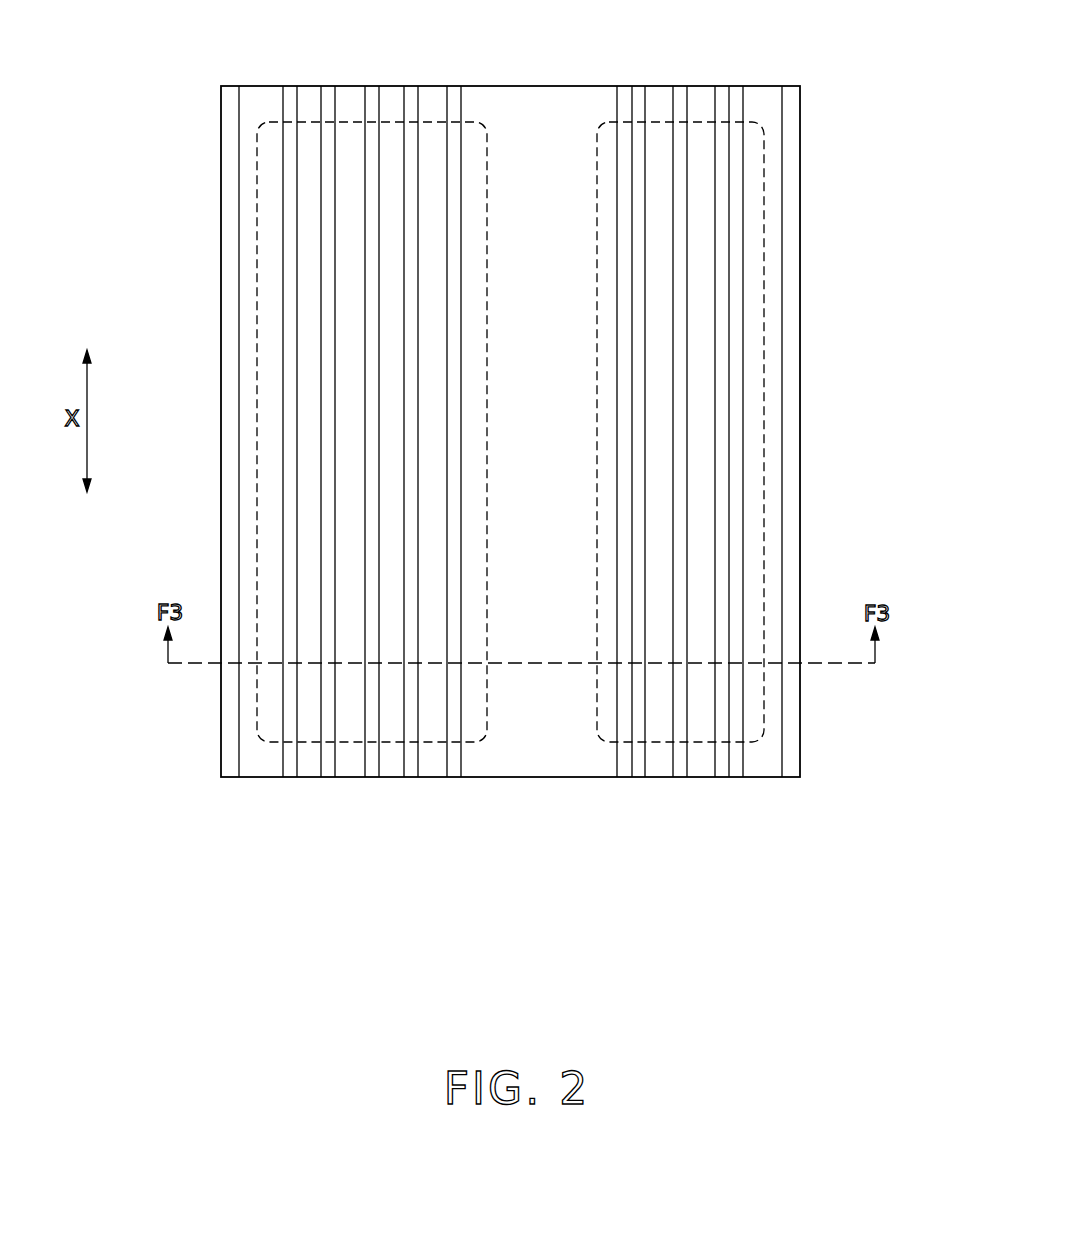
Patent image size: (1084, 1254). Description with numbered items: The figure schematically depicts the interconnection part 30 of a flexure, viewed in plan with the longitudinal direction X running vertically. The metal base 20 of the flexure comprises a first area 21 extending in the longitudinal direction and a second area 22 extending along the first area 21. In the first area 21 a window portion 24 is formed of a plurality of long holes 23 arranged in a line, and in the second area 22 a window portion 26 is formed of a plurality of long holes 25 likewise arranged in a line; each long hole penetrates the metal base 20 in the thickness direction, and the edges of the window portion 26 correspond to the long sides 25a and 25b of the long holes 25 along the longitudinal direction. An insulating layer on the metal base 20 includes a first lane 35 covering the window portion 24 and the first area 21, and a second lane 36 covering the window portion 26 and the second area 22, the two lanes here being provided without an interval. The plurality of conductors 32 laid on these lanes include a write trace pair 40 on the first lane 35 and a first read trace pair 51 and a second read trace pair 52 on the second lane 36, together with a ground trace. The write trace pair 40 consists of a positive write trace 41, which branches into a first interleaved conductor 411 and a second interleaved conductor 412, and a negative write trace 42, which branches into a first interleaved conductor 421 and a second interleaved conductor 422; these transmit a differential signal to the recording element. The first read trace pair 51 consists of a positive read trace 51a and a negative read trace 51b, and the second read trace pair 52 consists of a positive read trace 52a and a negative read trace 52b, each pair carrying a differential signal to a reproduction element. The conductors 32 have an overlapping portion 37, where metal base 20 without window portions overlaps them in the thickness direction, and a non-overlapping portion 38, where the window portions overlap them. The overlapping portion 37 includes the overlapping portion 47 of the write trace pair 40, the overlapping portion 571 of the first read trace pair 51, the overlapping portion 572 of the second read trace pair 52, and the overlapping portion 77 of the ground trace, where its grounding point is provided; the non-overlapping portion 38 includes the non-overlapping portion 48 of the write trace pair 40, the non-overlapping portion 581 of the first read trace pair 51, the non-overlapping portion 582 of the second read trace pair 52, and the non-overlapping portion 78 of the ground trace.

The metal base 20 is at (800, 486).
The first area 21 is at (663, 201).
The second area 22 is at (313, 201).
The long hole 23 is at (758, 160).
The window portion 24 is at (683, 145).
The long hole 25 is at (482, 157).
The long side 25a is at (487, 388).
The long side 25b is at (258, 392).
The window portion 26 is at (454, 141).
The interconnection part 30 is at (782, 579).
The conductors 32 is at (720, 963).
The first lane 35 is at (704, 201).
The second lane 36 is at (355, 201).
The overlapping portion 37 is at (624, 86).
The non-overlapping portion 38 is at (648, 379).
The write trace pair 40 is at (600, 921).
The positive write trace 41 is at (670, 877).
The first interleaved conductor 411 is at (658, 767).
The second interleaved conductor 412 is at (700, 750).
The negative write trace 42 is at (697, 877).
The first interleaved conductor 421 is at (734, 767).
The second interleaved conductor 422 is at (626, 750).
The overlapping portion 47 is at (625, 113).
The non-overlapping portion 48 is at (658, 423).
The first read trace pair 51 is at (488, 921).
The positive read trace 51a is at (410, 767).
The negative read trace 51b is at (453, 767).
The second read trace pair 52 is at (255, 921).
The positive read trace 52a is at (327, 767).
The negative read trace 52b is at (289, 767).
The overlapping portion 571 is at (410, 104).
The overlapping portion 572 is at (290, 105).
The non-overlapping portion 581 is at (408, 408).
The non-overlapping portion 582 is at (288, 421).
The overlapping portion 77 is at (370, 104).
The non-overlapping portion 78 is at (368, 408).